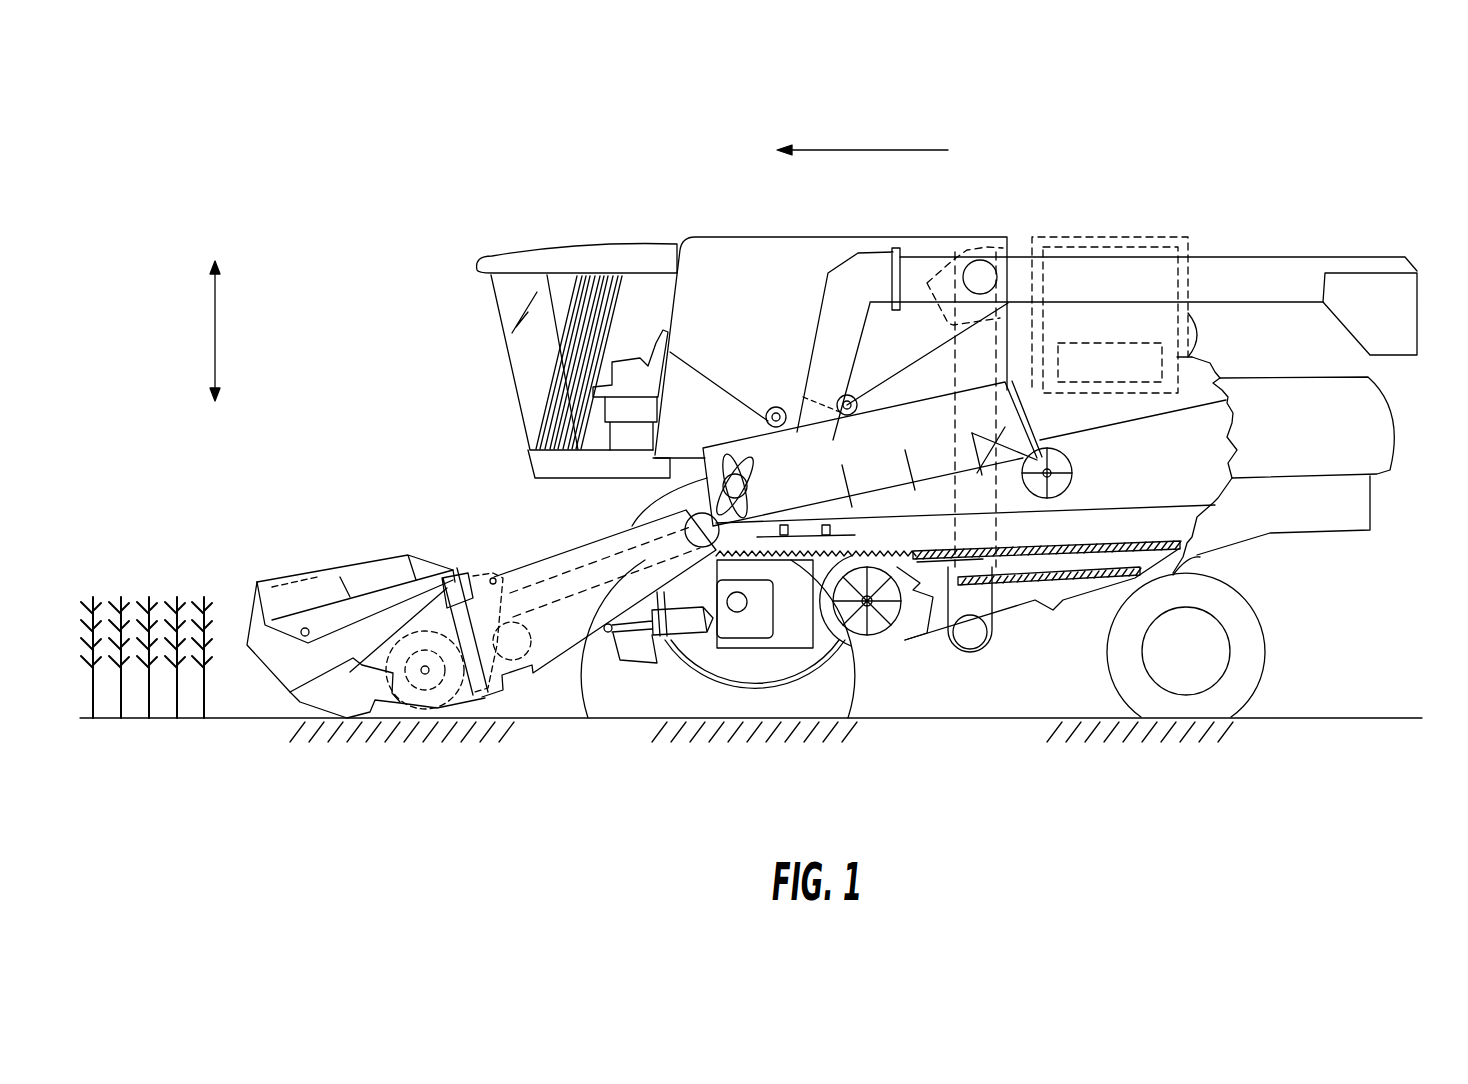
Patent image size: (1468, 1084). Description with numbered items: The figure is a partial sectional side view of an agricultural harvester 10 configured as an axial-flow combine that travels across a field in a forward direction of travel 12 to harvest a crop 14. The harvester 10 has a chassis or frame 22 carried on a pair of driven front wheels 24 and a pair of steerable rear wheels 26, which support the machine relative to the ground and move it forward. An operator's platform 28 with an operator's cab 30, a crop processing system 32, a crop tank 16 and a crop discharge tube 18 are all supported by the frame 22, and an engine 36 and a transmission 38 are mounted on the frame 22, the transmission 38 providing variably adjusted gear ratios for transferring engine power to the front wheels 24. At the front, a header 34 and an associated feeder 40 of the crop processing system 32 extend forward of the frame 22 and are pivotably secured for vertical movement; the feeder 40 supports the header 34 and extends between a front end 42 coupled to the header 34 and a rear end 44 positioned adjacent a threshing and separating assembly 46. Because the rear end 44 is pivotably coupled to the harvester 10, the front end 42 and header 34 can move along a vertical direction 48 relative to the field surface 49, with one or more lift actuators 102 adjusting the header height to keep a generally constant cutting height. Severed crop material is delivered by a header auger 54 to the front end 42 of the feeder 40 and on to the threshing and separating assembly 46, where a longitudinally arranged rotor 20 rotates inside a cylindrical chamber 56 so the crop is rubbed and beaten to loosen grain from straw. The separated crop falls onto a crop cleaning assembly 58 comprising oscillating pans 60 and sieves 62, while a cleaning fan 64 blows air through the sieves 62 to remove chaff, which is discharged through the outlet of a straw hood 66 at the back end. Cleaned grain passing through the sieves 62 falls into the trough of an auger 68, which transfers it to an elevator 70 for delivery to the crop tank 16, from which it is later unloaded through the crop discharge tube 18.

The agricultural harvester 10 is at (533, 200).
The forward direction of travel 12 is at (886, 150).
The crop 14 is at (162, 585).
The crop tank 16 is at (768, 237).
The crop discharge tube 18 is at (1246, 273).
The rotor 20 is at (733, 457).
The frame 22 is at (1200, 557).
The front wheels 24 is at (677, 687).
The rear wheels 26 is at (1260, 658).
The operator's platform 28 is at (540, 464).
The operator's cab 30 is at (520, 353).
The crop processing system 32 is at (1095, 498).
The header 34 is at (298, 560).
The engine 36 is at (1070, 243).
The transmission 38 is at (1090, 340).
The feeder 40 is at (510, 545).
The front end 42 is at (425, 620).
The rear end 44 is at (680, 500).
The threshing and separating assembly 46 is at (882, 453).
The vertical direction 48 is at (220, 328).
The field surface 49 is at (1330, 717).
The header auger 54 is at (440, 710).
The cylindrical chamber 56 is at (920, 407).
The crop cleaning assembly 58 is at (937, 660).
The pans 60 is at (860, 560).
The sieves 62 is at (1013, 553).
The cleaning fan 64 is at (876, 612).
The straw hood 66 is at (1395, 442).
The auger 68 is at (970, 645).
The elevator 70 is at (1012, 330).
The lift actuator 102 is at (630, 663).